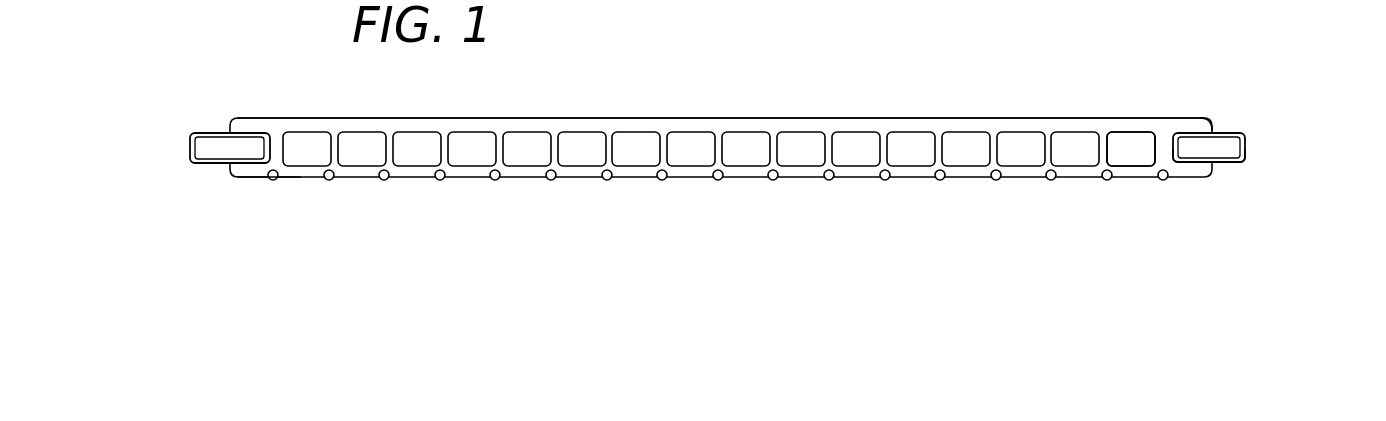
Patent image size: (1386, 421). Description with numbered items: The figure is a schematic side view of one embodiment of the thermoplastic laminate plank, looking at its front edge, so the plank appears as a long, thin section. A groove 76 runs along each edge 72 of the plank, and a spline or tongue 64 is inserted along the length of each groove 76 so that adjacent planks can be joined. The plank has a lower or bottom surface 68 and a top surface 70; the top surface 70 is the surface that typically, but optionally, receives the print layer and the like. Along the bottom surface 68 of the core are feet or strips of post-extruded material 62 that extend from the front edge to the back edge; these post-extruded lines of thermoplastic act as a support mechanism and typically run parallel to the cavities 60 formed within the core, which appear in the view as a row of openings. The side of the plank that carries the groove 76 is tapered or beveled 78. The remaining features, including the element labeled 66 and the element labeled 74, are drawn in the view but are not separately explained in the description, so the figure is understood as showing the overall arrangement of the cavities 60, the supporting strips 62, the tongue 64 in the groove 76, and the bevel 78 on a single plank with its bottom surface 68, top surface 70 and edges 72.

The cavities 60 is at (1128, 147).
The feet or strips of post-extruded material 62 is at (1050, 180).
The spline or tongue 64 is at (1244, 161).
The window aperture 66 is at (933, 145).
The lower or bottom surface of the spline 68 is at (642, 192).
The top surface 70 is at (831, 105).
The edges of the spline having the groove 72 is at (200, 120).
The bottom edge of strip 74 is at (258, 242).
The groove 76 is at (1178, 161).
The tapered or beveled side 78 is at (1210, 118).